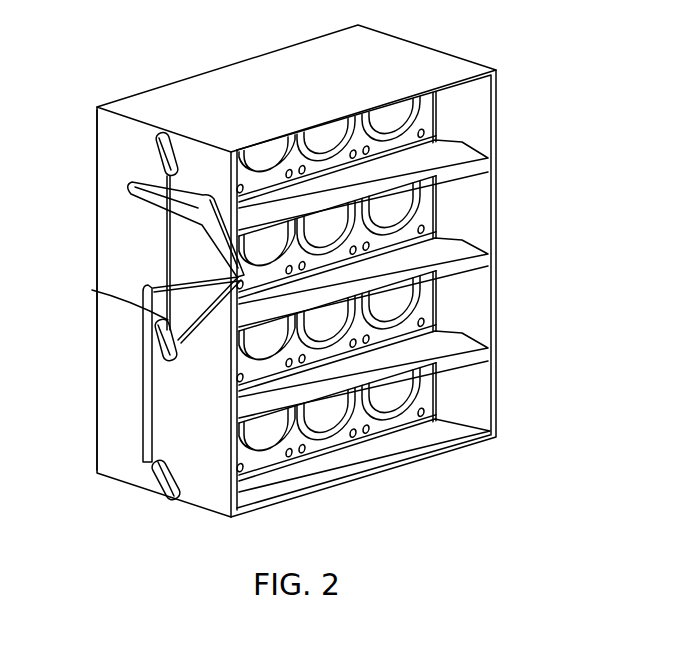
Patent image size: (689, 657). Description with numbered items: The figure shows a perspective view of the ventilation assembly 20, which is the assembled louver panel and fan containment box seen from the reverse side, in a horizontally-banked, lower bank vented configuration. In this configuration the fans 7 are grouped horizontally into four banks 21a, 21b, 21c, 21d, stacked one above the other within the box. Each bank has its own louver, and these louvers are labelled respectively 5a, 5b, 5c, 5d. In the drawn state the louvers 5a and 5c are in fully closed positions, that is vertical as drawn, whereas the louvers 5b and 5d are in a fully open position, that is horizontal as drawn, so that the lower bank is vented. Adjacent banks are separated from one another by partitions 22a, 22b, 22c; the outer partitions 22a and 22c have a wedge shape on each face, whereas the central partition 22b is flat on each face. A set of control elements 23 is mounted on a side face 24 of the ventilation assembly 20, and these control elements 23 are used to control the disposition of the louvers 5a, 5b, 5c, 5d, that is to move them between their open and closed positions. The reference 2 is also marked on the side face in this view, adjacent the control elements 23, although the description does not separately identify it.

The ventilation assembly 20 is at (94, 58).
The lever handle 2 is at (192, 252).
The control elements 23 is at (148, 286).
The side face 24 is at (113, 437).
The louver 5a is at (395, 117).
The louver 5b is at (320, 274).
The louver 5c is at (265, 343).
The louver 5d is at (343, 458).
The fans 7 is at (405, 197).
The bank 21a is at (401, 131).
The bank 21b is at (373, 274).
The bank 21c is at (370, 352).
The bank 21d is at (405, 435).
The partition 22a is at (465, 157).
The partition 22b is at (478, 268).
The partition 22c is at (475, 355).